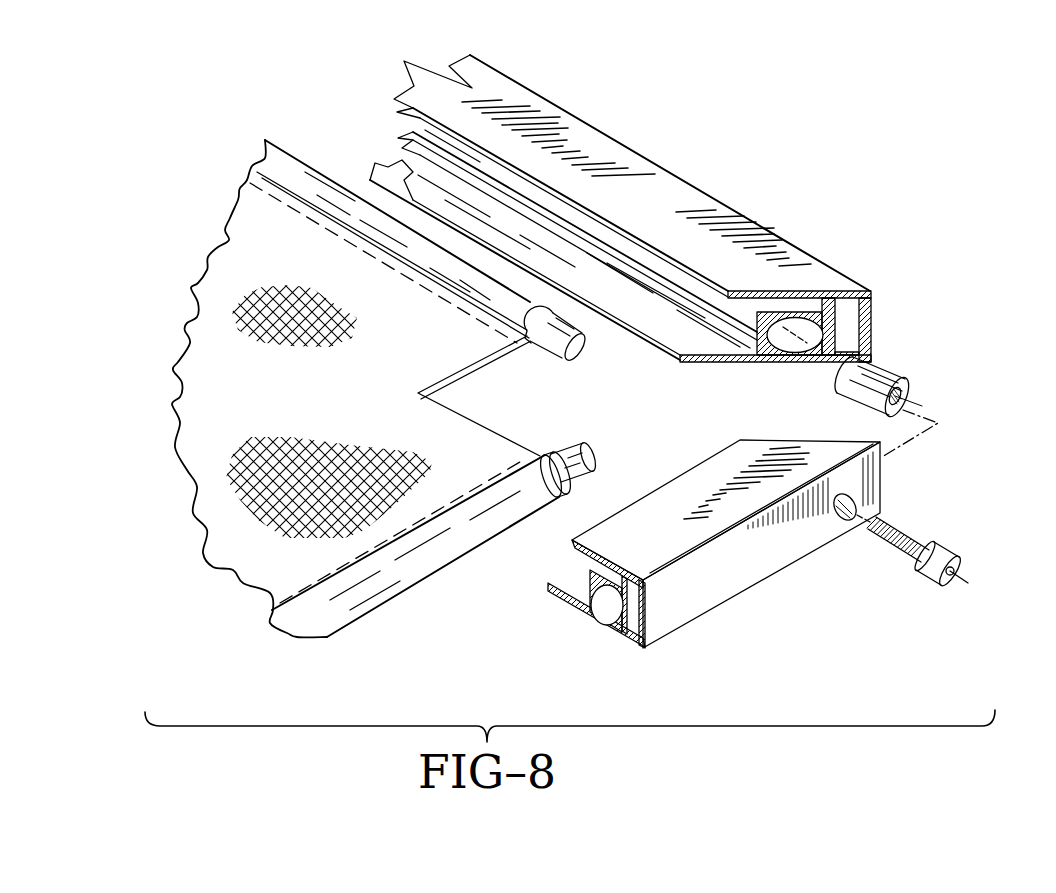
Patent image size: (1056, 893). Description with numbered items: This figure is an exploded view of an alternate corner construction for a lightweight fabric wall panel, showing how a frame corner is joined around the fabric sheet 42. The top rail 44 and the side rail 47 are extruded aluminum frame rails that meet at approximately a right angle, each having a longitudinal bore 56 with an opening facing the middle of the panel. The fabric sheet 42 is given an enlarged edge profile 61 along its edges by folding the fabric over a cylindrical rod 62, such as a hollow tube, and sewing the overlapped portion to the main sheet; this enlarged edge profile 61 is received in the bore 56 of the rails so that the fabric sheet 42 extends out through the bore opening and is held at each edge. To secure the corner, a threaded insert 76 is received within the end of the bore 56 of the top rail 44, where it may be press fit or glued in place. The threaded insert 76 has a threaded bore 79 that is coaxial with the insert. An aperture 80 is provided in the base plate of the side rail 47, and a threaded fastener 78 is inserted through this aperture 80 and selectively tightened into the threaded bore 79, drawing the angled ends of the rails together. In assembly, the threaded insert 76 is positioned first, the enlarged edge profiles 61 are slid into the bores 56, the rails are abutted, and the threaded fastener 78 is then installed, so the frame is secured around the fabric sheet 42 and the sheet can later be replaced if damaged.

The top rail 44 is at (630, 167).
The side rail 47 is at (668, 618).
The fabric sheet 42 is at (443, 423).
The enlarged edge profile 61 is at (360, 619).
The cylindrical rod 62 is at (578, 440).
The bore 56 is at (792, 352).
The threaded insert 76 is at (890, 350).
The threaded bore 79 is at (905, 398).
The threaded fastener 78 is at (948, 543).
The aperture 80 is at (838, 520).